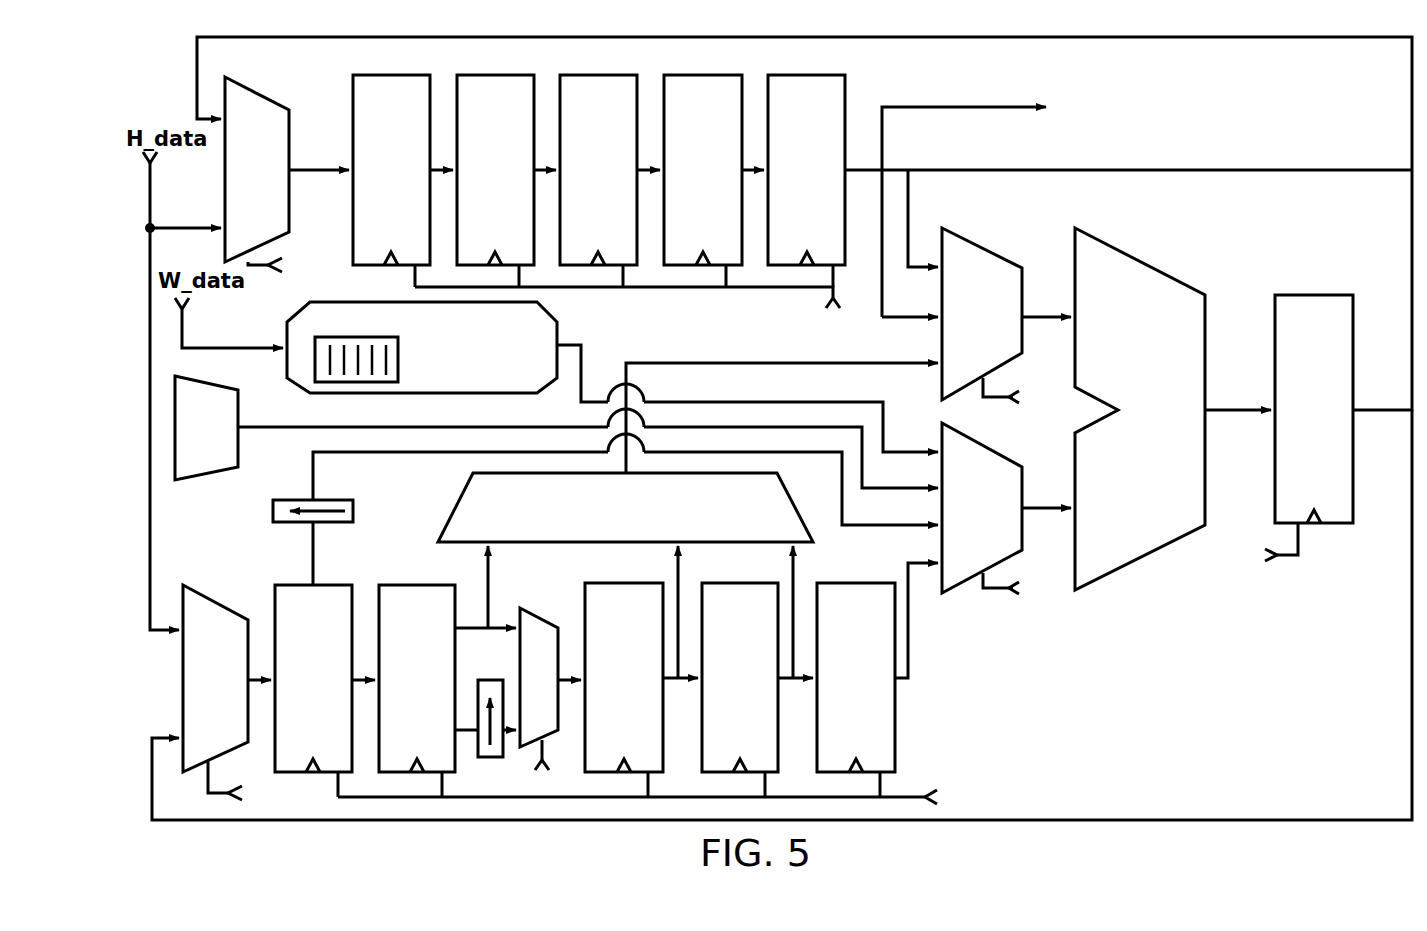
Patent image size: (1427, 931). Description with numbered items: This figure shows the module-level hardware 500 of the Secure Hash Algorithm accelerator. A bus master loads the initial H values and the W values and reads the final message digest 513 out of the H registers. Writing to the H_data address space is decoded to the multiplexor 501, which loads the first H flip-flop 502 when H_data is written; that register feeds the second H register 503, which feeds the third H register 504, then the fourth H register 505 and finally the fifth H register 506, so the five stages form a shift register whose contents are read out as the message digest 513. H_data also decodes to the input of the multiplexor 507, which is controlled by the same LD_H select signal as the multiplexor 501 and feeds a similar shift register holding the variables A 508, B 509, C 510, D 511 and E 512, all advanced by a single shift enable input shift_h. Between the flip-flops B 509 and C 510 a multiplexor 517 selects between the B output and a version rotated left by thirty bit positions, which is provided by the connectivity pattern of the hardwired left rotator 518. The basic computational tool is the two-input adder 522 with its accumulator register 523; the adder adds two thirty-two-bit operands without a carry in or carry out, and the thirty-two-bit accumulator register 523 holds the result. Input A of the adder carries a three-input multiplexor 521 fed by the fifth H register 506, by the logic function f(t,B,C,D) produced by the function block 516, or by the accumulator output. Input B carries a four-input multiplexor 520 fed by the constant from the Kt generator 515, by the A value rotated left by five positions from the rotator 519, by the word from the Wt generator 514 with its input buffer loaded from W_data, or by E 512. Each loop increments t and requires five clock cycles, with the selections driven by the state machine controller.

The hardware 500 is at (1182, 683).
The multiplexor 501 is at (259, 77).
The H0 register 502 is at (391, 75).
The H1 register 503 is at (494, 75).
The H2 register 504 is at (597, 75).
The H3 register 505 is at (701, 75).
The H4 register 506 is at (802, 75).
The multiplexor 507 is at (206, 595).
The A register 508 is at (322, 585).
The B register 509 is at (397, 585).
The C register 510 is at (606, 583).
The D register 511 is at (721, 583).
The E register 512 is at (837, 583).
The final message digest 513 is at (900, 107).
The Wt generator 514 is at (560, 326).
The Kt generator 515 is at (206, 380).
The ft(B,C,D) logic function unit 516 is at (786, 490).
The multiplexor 517 is at (553, 626).
The hardwired left rotator 518 is at (490, 680).
The rotate/shift unit for A (A 5) 519 is at (339, 500).
The four input multiplexor 520 is at (1004, 457).
The three input multiplexor 521 is at (1004, 262).
The adder 522 is at (1139, 262).
The accumulator register 523 is at (1297, 295).